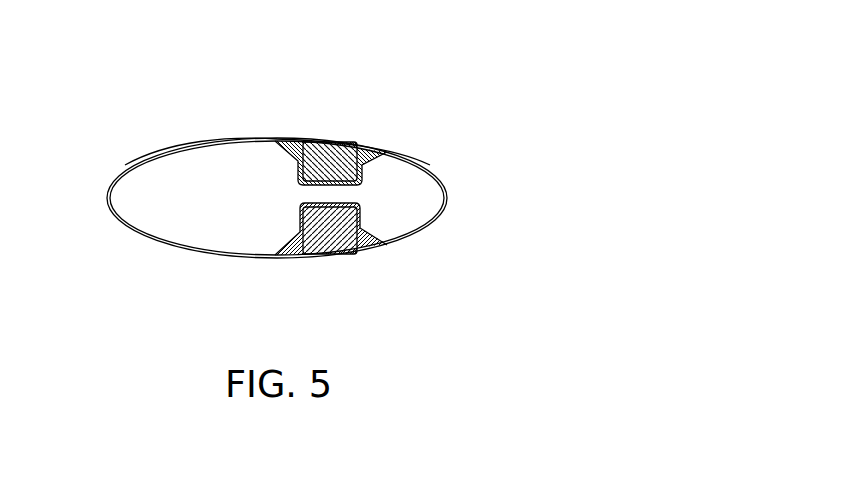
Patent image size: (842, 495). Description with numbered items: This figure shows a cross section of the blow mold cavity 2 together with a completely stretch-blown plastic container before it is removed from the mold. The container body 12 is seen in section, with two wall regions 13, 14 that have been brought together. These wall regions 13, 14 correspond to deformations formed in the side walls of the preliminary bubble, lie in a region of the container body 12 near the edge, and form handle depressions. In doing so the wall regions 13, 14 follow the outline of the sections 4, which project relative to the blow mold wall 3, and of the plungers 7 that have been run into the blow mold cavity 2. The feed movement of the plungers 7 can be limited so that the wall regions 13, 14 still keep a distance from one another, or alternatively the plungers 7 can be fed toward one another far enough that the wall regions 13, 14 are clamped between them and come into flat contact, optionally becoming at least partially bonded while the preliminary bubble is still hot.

The blow mold cavity 2 is at (172, 193).
The blow mold wall 3 is at (159, 235).
The container body 12 is at (227, 138).
The sections 4 is at (298, 138).
The plungers 7 is at (345, 140).
The wall region 13 is at (350, 193).
The wall region 14 is at (312, 200).